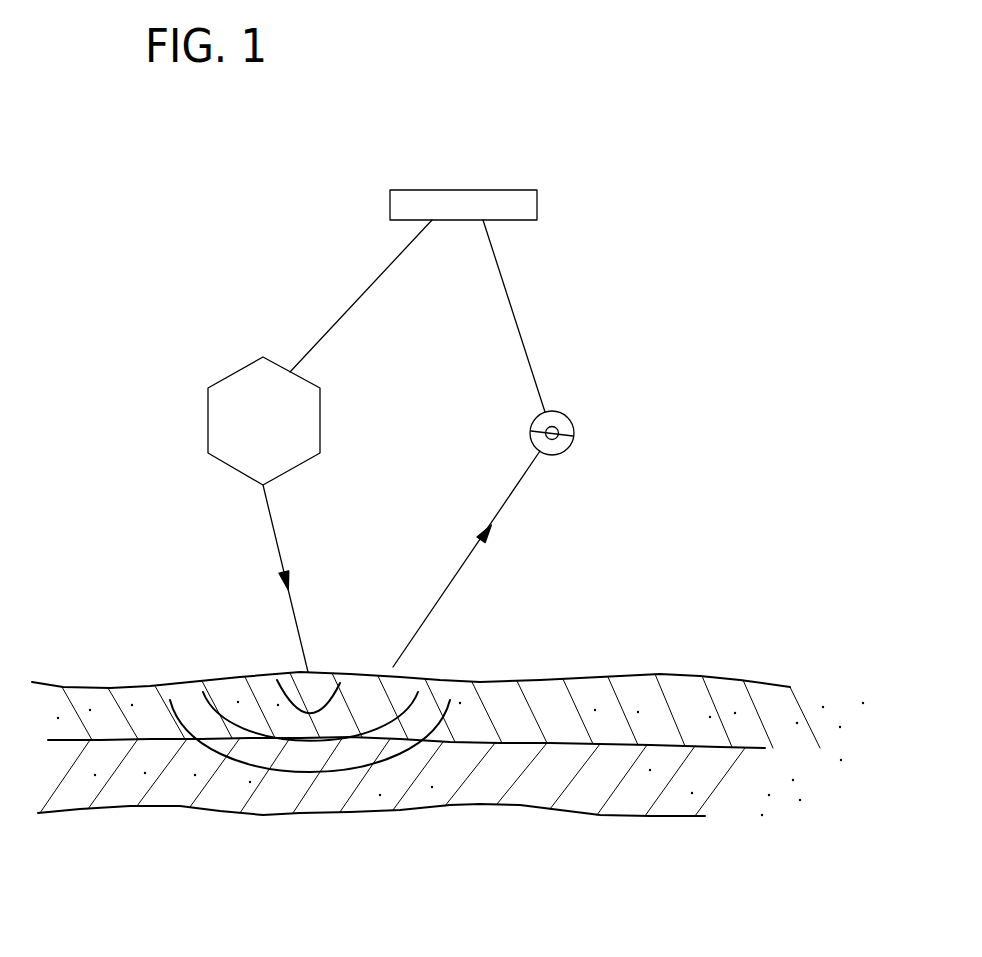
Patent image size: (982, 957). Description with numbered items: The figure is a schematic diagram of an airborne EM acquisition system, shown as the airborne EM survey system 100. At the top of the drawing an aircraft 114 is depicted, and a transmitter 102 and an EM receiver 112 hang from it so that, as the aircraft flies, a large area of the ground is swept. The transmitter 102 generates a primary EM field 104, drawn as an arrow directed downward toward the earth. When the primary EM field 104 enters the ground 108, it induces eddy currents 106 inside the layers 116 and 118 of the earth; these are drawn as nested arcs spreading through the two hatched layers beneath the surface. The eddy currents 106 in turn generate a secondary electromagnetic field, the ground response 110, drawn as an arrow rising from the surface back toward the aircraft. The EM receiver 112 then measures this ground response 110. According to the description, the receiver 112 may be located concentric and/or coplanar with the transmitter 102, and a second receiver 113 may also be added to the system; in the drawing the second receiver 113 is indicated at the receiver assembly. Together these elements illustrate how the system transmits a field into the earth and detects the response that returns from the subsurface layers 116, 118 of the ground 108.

The airborne EM survey system 100 is at (488, 127).
The transmitter 102 is at (320, 386).
The primary EM field 104 is at (295, 605).
The eddy currents 106 is at (315, 773).
The ground 108 is at (448, 744).
The ground response 110 is at (461, 569).
The EM receiver 112 is at (567, 418).
The second receiver 113 is at (574, 437).
The aircraft 114 is at (532, 190).
The layer 116 is at (560, 722).
The layer 118 is at (546, 797).